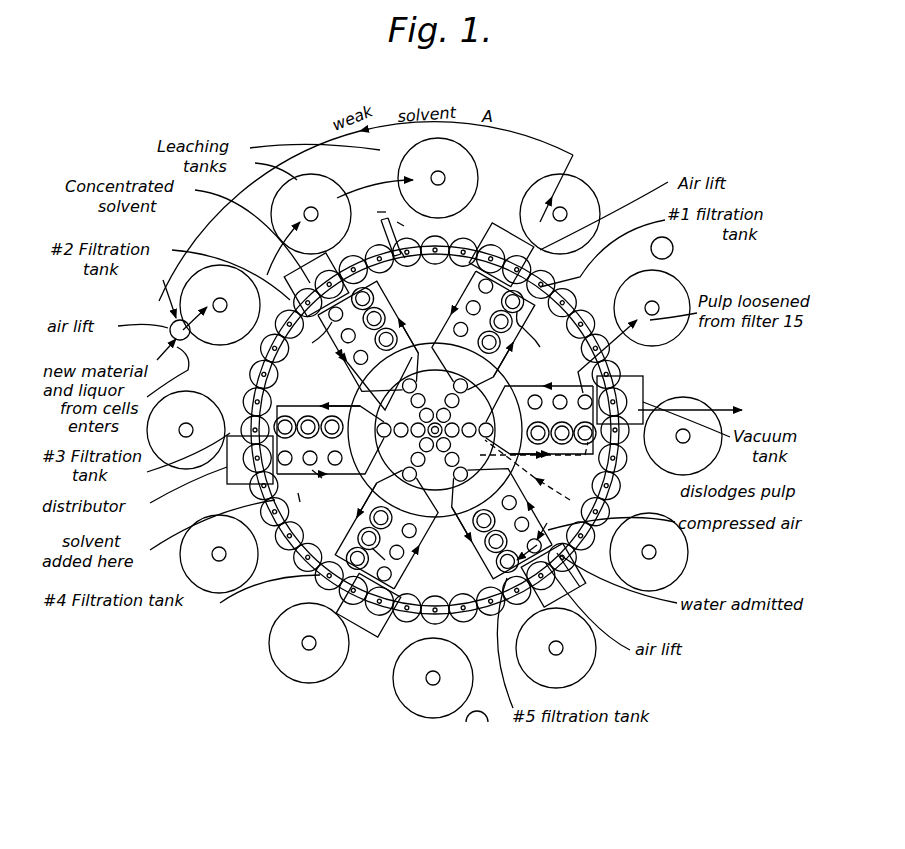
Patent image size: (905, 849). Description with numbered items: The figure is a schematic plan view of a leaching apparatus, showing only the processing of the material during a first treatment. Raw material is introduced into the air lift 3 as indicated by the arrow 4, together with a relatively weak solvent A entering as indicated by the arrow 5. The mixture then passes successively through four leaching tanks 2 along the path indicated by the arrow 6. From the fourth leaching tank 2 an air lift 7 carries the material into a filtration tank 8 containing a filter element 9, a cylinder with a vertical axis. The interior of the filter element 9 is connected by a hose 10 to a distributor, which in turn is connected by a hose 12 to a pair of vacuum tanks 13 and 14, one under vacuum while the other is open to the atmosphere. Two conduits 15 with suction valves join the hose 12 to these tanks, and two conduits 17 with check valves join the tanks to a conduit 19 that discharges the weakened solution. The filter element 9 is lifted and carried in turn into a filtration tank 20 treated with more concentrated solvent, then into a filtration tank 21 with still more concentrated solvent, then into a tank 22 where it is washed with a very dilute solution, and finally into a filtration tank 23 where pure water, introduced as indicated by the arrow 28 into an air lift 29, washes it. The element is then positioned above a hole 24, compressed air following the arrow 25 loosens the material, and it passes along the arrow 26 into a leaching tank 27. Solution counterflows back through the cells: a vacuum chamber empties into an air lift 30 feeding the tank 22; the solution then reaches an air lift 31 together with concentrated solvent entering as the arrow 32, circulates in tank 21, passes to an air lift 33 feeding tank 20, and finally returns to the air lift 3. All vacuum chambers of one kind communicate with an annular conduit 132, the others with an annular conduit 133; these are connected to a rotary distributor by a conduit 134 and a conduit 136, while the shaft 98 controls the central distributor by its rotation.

The leaching tank 2 is at (429, 145).
The air lift 3 is at (171, 372).
The arrow 4 is at (165, 352).
The arrow 5 is at (168, 312).
The arrow 6 is at (353, 193).
The air lift 7 is at (487, 310).
The filtration tank 8 is at (531, 340).
The filter element 9 is at (542, 348).
The hose 10 is at (397, 320).
The hose 12 is at (455, 305).
The vacuum tank 13 is at (344, 208).
The vacuum tank 14 is at (392, 650).
The conduit 15 is at (333, 597).
The conduit 17 is at (632, 400).
The conduit 19 is at (735, 407).
The filtration tank 20 is at (381, 284).
The filtration tank 21 is at (278, 412).
The tank 22 is at (341, 554).
The filtration tank 23 is at (413, 597).
The hole 24 is at (534, 461).
The arrow 25 is at (555, 492).
The arrow 26 is at (613, 317).
The leaching tank 27 is at (679, 282).
The arrow 28 is at (537, 531).
The air lift 29 is at (579, 577).
The air lift 30 is at (387, 552).
The air lift 31 is at (327, 482).
The arrow 32 is at (304, 507).
The air lift 33 is at (309, 339).
The shaft 98 is at (444, 428).
The annular conduit 132 is at (382, 224).
The annular conduit 133 is at (405, 258).
The conduit 134 is at (386, 199).
The conduit 136 is at (410, 222).